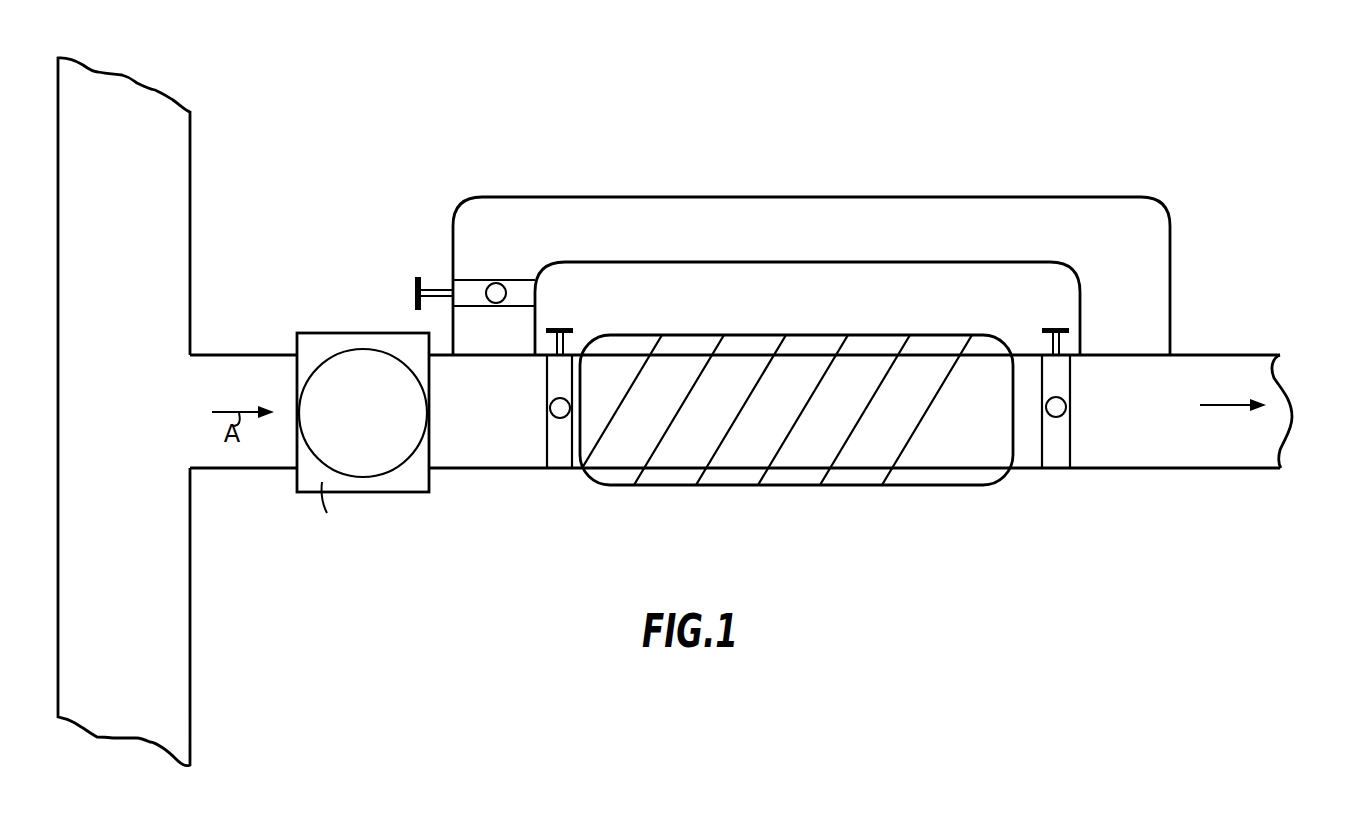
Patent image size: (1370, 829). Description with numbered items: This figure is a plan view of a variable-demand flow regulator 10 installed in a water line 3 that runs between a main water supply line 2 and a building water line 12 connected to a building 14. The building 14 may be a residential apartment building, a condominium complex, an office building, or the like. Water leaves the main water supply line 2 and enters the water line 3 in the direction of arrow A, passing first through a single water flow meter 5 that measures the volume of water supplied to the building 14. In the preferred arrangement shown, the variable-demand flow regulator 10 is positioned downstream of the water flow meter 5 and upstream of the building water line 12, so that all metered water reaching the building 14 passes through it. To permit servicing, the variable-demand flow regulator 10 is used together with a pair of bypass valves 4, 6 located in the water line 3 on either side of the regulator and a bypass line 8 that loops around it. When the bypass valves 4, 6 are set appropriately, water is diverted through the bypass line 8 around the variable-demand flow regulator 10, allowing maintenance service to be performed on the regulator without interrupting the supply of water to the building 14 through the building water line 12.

The main water supply line 2 is at (175, 292).
The water line 3 is at (238, 368).
The bypass valve 4 is at (463, 290).
The water flow meter 5 is at (363, 337).
The bypass valve 6 is at (1060, 380).
The bypass line 8 is at (793, 210).
The variable-demand flow regulator 10 is at (837, 423).
The building water line 12 is at (1243, 365).
The building 14 is at (1327, 393).